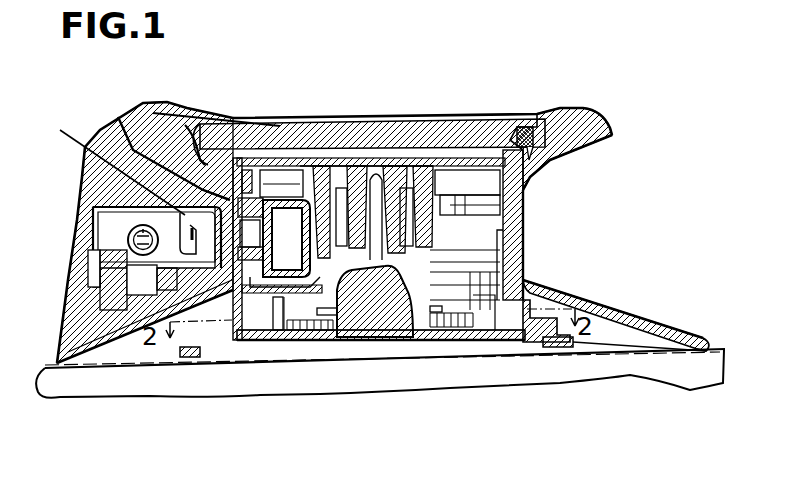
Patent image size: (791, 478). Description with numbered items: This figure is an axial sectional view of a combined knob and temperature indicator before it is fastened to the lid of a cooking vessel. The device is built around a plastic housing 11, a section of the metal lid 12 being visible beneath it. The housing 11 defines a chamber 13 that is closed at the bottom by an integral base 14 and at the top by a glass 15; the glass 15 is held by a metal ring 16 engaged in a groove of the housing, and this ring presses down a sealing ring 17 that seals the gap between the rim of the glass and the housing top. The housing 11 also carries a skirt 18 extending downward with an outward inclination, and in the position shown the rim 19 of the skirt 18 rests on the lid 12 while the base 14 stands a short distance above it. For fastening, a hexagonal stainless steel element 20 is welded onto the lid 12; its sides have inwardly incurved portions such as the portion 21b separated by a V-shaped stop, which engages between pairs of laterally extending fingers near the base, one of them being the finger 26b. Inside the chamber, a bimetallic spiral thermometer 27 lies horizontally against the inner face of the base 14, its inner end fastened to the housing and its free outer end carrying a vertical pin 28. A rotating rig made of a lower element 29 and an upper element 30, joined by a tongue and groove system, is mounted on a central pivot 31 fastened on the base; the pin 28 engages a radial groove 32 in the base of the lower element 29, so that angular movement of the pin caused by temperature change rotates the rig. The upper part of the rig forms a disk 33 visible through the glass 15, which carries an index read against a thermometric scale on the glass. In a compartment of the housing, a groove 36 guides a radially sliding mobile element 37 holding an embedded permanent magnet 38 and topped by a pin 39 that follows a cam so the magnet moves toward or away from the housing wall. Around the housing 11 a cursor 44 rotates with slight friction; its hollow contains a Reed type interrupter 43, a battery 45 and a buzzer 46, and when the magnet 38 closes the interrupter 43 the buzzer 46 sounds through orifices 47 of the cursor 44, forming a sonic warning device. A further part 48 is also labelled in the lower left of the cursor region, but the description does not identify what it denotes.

The housing 11 is at (527, 186).
The lid 12 is at (148, 383).
The chamber 13 is at (503, 243).
The base 14 is at (487, 300).
The glass 15 is at (400, 133).
The metal ring 16 is at (543, 118).
The sealing ring 17 is at (245, 190).
The skirt 18 is at (603, 302).
The rim 19 is at (697, 338).
The stainless steel element 20 is at (186, 358).
The inwardly incurved portion 21b is at (540, 318).
The finger 26b is at (161, 411).
The bimetallic spiral thermometer 27 is at (443, 327).
The vertical pin 28 is at (270, 345).
The lower element of the rotating rig 29 is at (423, 253).
The upper element of the rotating rig 30 is at (420, 190).
The central pivot 31 is at (330, 240).
The radial groove 32 is at (300, 298).
The disk 33 is at (440, 162).
The groove 36 is at (377, 118).
The mobile element 37 is at (289, 316).
The permanent magnet 38 is at (263, 237).
The pin 39 is at (250, 176).
The Reed type interrupter 43 is at (125, 155).
The cursor 44 is at (97, 178).
The battery 45 is at (95, 150).
The buzzer 46 is at (95, 283).
The orifices 47 is at (62, 272).
The support column 48 is at (72, 321).